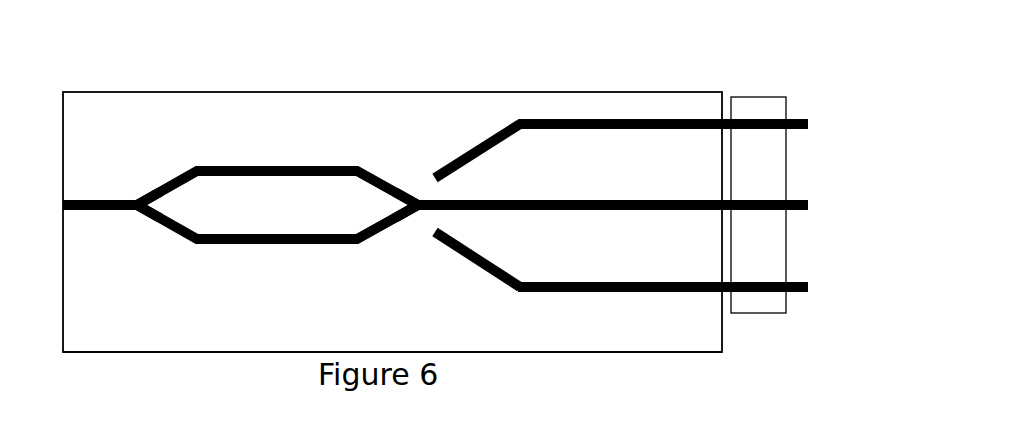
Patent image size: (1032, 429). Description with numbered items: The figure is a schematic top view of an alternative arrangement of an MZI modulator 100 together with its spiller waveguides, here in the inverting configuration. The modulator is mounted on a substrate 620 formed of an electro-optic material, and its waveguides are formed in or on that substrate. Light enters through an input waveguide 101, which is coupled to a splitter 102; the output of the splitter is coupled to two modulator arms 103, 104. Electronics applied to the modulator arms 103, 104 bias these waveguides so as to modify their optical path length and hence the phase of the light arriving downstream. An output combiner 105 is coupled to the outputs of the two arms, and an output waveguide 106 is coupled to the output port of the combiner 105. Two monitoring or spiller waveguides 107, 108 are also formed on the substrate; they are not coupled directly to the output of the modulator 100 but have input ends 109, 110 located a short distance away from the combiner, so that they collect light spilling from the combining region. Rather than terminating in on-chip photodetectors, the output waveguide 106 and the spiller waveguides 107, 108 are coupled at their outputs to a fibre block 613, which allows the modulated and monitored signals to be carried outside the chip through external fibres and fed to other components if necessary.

The MZI modulator 100 is at (219, 90).
The input waveguide 101 is at (100, 212).
The splitter 102 is at (137, 212).
The modulator arm 103 is at (318, 167).
The modulator arm 104 is at (327, 244).
The output combiner 105 is at (420, 199).
The output waveguide 106 is at (625, 200).
The spiller waveguide 107 is at (625, 119).
The spiller waveguide 108 is at (625, 292).
The input end 109 is at (428, 162).
The input end 110 is at (434, 236).
The fibre block 613 is at (758, 97).
The substrate 620 is at (172, 352).